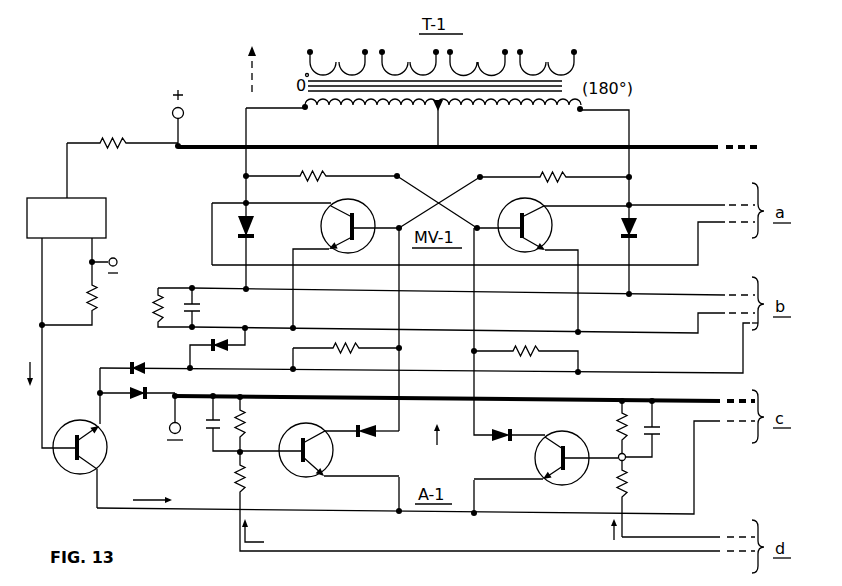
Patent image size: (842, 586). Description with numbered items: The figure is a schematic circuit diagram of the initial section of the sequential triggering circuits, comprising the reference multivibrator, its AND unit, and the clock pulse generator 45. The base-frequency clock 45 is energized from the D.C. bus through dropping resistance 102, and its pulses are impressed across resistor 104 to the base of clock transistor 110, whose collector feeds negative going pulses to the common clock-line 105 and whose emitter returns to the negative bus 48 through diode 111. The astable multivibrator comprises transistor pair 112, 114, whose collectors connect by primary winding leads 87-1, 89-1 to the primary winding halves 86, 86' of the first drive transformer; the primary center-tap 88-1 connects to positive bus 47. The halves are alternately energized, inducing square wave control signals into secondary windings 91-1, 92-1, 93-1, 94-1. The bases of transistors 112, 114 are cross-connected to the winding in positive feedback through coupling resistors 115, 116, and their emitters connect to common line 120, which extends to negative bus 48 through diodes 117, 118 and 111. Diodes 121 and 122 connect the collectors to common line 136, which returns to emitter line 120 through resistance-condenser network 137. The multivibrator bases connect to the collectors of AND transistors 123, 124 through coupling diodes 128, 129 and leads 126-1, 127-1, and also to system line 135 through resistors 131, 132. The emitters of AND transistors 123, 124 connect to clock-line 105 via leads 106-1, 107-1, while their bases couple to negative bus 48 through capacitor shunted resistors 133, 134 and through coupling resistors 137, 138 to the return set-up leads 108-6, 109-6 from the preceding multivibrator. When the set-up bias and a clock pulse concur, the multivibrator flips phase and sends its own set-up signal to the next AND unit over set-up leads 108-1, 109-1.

The dropping resistance 102 is at (109, 140).
The positive bus 47 is at (230, 149).
The clock pulse generator 45 is at (107, 212).
The resistor 104 is at (95, 292).
The clock transistor 110 is at (60, 418).
The diode 111 is at (136, 407).
The diode 118 is at (136, 366).
The diode 117 is at (228, 350).
The resistance-condenser network 137 is at (238, 482).
The common emitter line 120 is at (279, 326).
The diode 121 is at (254, 228).
The multivibrator transistor 112 is at (367, 206).
The multivibrator transistor 114 is at (499, 208).
The diode 122 is at (614, 232).
The coupling resistor 115 is at (306, 174).
The coupling resistor 116 is at (555, 175).
The primary winding half 86 is at (369, 118).
The primary winding half 86' is at (510, 118).
The primary winding lead 87-1 is at (250, 135).
The primary center-tap 88-1 is at (441, 126).
The primary winding lead 89-1 is at (633, 131).
The secondary winding 91-1 is at (337, 57).
The secondary winding 92-1 is at (409, 57).
The secondary winding 93-1 is at (477, 58).
The secondary winding 94-1 is at (547, 57).
The resistor 131 is at (344, 338).
The resistor 132 is at (525, 340).
The capacitor shunted resistor 133 is at (237, 405).
The capacitor shunted resistor 134 is at (635, 412).
The system line 135 is at (690, 376).
The common line 136 is at (697, 298).
The AND transistor 123 is at (302, 424).
The AND transistor 124 is at (586, 424).
The coupling diode 128 is at (361, 435).
The coupling diode 129 is at (508, 442).
The lead 126-1 is at (398, 384).
The lead 127-1 is at (478, 388).
The lead 106-1 is at (398, 492).
The lead 107-1 is at (477, 503).
The clock-line 105 is at (180, 510).
The negative bus 48 is at (298, 400).
The coupling resistor 138 is at (627, 488).
The set-up lead 108-1 is at (697, 256).
The set-up lead 109-1 is at (677, 206).
The return set-up lead 108-6 is at (680, 536).
The return set-up lead 109-6 is at (246, 552).